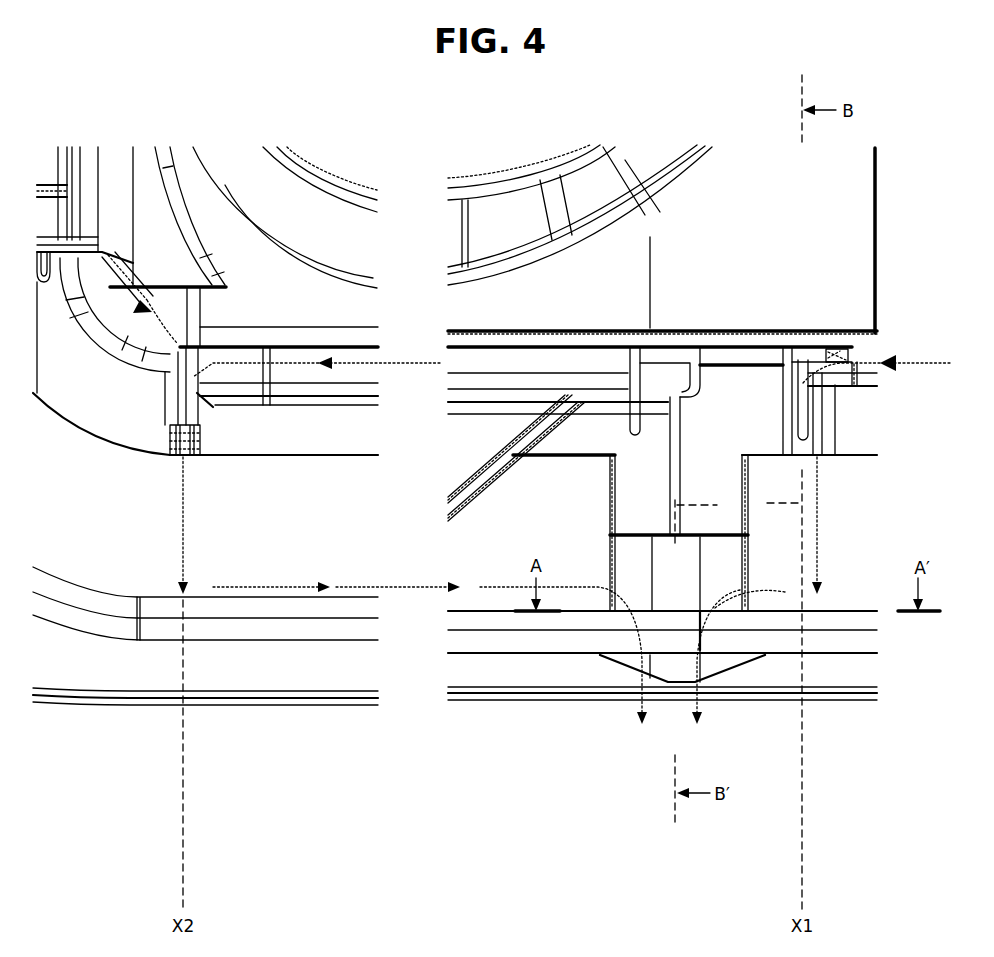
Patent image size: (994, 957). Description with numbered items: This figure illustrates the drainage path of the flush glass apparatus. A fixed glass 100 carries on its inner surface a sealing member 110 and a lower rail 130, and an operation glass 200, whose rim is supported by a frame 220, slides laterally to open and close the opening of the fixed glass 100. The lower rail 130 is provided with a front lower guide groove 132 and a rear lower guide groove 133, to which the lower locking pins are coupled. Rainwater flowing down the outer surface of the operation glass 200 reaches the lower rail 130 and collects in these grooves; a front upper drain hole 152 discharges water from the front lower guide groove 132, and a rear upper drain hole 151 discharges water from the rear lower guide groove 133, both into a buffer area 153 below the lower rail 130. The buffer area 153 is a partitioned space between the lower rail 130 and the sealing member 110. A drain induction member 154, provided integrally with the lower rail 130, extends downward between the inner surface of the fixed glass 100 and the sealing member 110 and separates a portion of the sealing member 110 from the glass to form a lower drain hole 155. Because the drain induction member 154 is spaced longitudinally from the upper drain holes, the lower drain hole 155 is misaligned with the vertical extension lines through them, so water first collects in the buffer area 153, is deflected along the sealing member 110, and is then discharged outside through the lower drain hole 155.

The fixed glass 100 is at (258, 680).
The sealing member 110 is at (266, 605).
The lower rail 130 is at (872, 444).
The front lower guide groove 132 is at (290, 348).
The rear lower guide groove 133 is at (828, 355).
The rear upper drain hole 151 is at (800, 390).
The front upper drain hole 152 is at (178, 458).
The buffer area 153 is at (383, 527).
The drain induction member 154 is at (665, 566).
The lower drain hole 155 is at (630, 648).
The operation glass 200 is at (697, 241).
The frame 220 is at (877, 283).